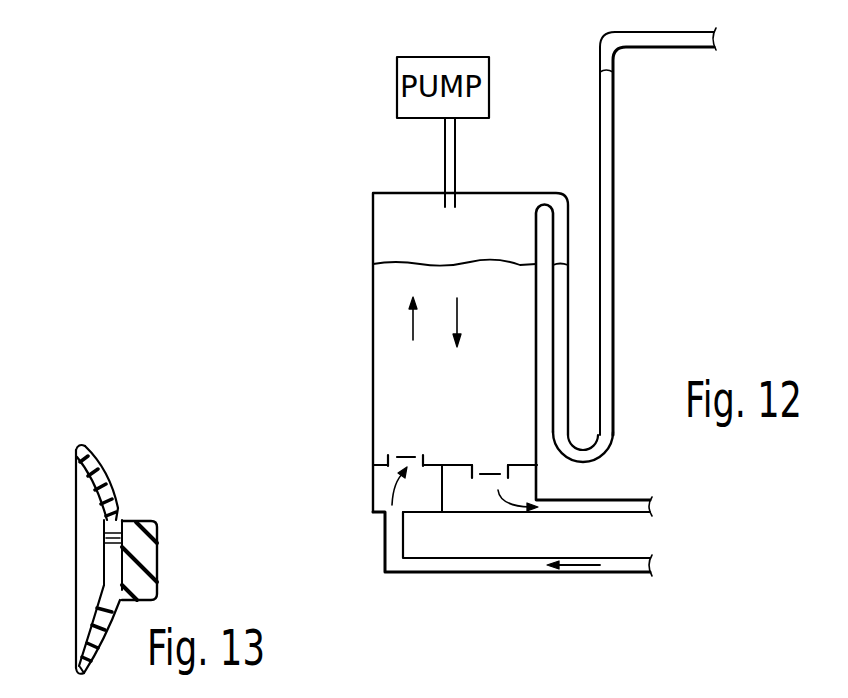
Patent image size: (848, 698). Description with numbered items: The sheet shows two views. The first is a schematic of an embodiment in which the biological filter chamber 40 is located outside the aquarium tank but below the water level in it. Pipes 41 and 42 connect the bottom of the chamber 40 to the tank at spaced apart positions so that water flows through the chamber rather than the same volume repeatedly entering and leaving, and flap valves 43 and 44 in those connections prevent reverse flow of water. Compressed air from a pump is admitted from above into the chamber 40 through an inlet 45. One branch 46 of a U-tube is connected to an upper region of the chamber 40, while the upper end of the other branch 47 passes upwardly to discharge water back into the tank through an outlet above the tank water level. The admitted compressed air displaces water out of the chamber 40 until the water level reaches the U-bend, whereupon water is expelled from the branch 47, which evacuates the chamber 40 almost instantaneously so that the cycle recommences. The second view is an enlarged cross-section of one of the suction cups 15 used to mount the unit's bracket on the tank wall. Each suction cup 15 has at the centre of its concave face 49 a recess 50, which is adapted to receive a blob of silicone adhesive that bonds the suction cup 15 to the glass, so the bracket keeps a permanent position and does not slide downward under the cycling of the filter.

In FIG. 13, the suction cup 15 is at (102, 472).
In FIG. 12, the biological filter chamber 40 is at (373, 316).
In FIG. 12, the pipe 41 is at (507, 568).
In FIG. 12, the pipe 42 is at (582, 500).
In FIG. 12, the flap valve 43 is at (402, 455).
In FIG. 12, the flap valve 44 is at (488, 465).
In FIG. 12, the inlet 45 is at (452, 140).
In FIG. 12, the branch of U-tube 46 is at (568, 387).
In FIG. 12, the other branch of U-tube 47 is at (607, 283).
In FIG. 13, the concave face 49 is at (104, 519).
In FIG. 13, the recess 50 is at (115, 588).